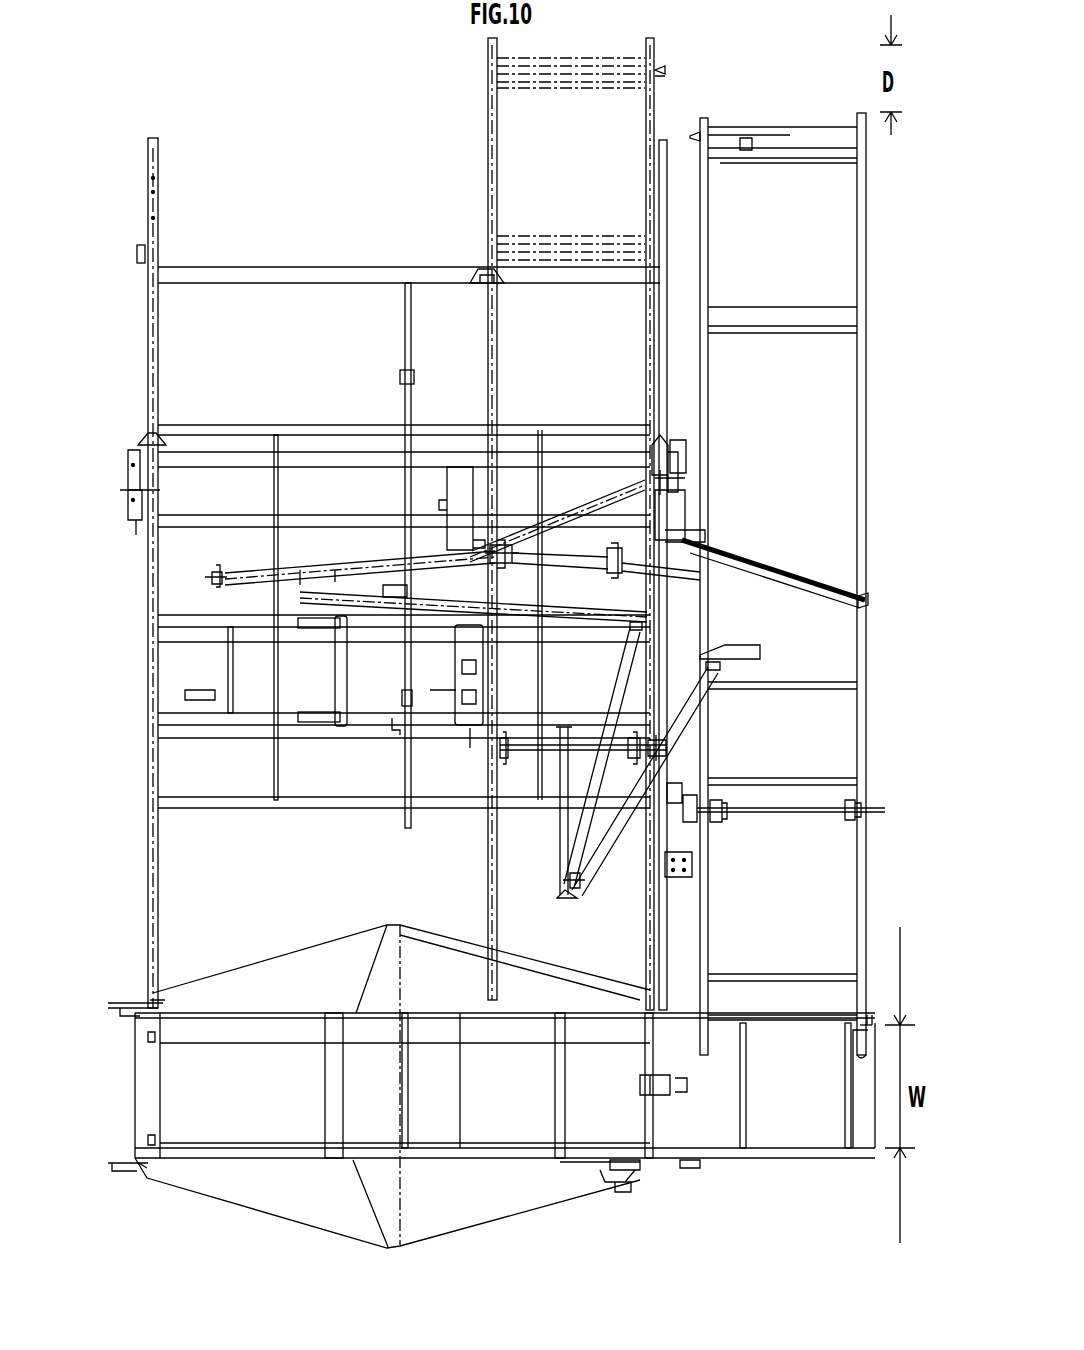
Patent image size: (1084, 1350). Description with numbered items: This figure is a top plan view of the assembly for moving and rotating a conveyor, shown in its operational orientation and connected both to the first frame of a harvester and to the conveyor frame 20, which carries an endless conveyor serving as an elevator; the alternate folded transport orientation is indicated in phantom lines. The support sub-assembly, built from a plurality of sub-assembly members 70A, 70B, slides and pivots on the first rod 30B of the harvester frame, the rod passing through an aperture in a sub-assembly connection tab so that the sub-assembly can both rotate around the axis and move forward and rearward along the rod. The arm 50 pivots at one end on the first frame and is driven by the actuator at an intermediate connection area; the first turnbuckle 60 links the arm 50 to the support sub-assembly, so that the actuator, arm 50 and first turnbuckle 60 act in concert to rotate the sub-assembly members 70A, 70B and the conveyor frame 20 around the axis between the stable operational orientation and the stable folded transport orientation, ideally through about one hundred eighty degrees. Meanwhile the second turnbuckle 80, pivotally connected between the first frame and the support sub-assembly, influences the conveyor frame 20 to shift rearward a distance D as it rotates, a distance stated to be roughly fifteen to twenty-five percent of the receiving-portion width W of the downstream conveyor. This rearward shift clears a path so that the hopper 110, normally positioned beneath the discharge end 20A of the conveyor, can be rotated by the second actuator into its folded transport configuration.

The conveyor frame 20 is at (488, 182).
The discharge end 20A is at (905, 1060).
The first rod 30B is at (720, 658).
The arm 50 is at (260, 585).
The first turnbuckle 60 is at (150, 440).
The sub-assembly member 70A is at (500, 650).
The sub-assembly member 70B is at (500, 505).
The second turnbuckle 80 is at (600, 775).
The hopper 110 is at (560, 1148).